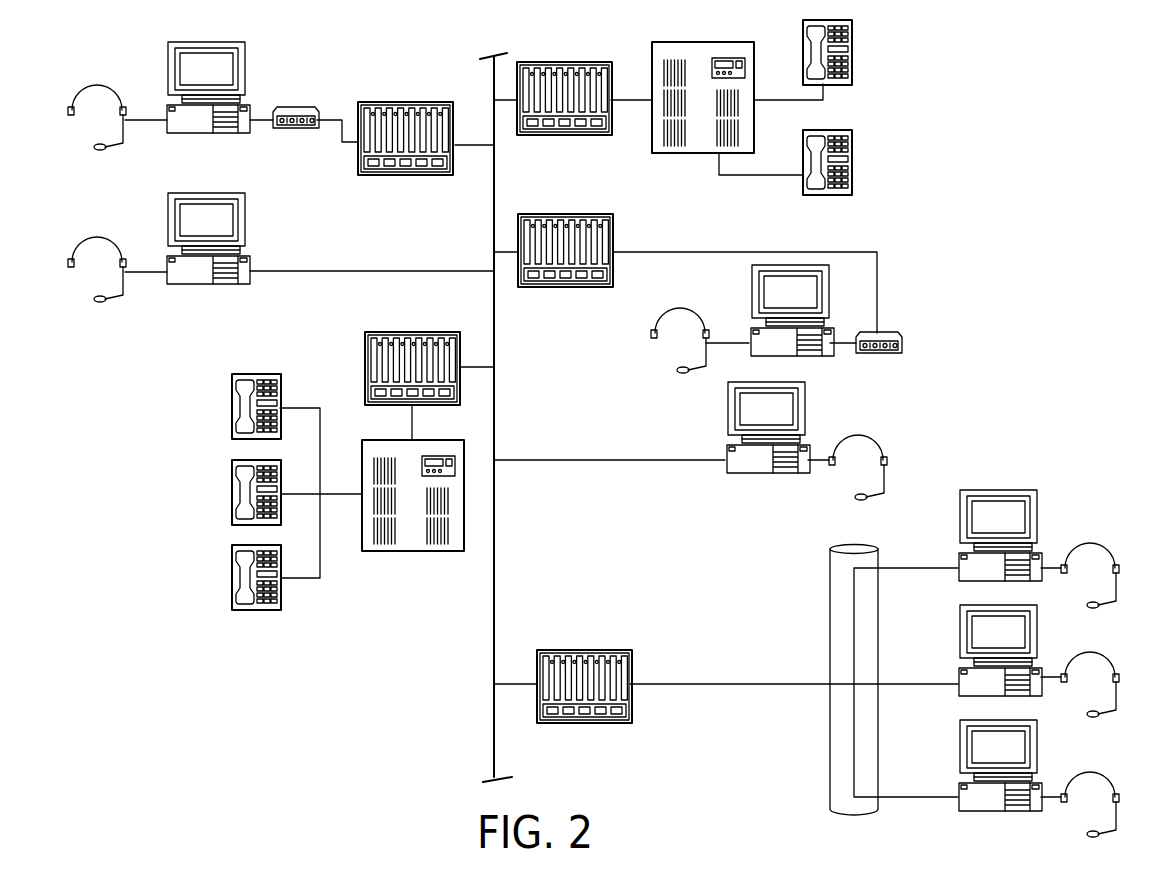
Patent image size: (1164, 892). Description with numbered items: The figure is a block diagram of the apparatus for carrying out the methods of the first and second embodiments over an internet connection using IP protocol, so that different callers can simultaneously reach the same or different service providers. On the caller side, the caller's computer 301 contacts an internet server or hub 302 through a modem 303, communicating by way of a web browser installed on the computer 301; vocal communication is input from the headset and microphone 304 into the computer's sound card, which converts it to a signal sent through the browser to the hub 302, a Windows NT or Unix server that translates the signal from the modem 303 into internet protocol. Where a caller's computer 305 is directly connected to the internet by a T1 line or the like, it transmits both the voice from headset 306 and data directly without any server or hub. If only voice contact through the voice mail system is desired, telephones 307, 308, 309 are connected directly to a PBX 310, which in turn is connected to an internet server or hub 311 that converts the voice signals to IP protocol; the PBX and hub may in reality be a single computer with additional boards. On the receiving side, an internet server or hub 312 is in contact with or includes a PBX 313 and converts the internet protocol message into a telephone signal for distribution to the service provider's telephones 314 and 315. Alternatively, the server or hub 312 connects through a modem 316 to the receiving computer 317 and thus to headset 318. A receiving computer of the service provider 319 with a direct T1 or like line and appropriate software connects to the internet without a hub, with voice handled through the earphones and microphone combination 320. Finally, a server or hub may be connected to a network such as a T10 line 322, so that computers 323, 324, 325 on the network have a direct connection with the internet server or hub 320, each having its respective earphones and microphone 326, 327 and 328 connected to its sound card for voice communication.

The caller's computer 301 is at (245, 56).
The internet server or hub 302 is at (415, 102).
The modem 303 is at (302, 108).
The headset and microphone 304 is at (88, 86).
The computer 305 is at (245, 208).
The headset 306 is at (101, 220).
The telephone 307 is at (232, 403).
The telephone 308 is at (232, 495).
The telephone 309 is at (232, 577).
The PBX 310 is at (388, 551).
The internet server or hub 311 is at (410, 332).
The internet server or hub 312 is at (560, 62).
The PBX 313 is at (565, 214).
The telephone 314 is at (803, 22).
The telephone 315 is at (818, 197).
The modem 316 is at (878, 333).
The receiving computer 317 is at (752, 305).
The headset 318 is at (660, 307).
The receiving computer 319 is at (728, 422).
The earphones and microphone combination 320 is at (848, 433).
The T10 line 322 is at (960, 534).
The computer 323 is at (960, 647).
The computer 324 is at (960, 762).
The computer 325 is at (1077, 545).
The earphones and microphone 326 is at (1077, 662).
The earphones and microphone 327 is at (1078, 770).
The earphones and microphone 328 is at (830, 622).